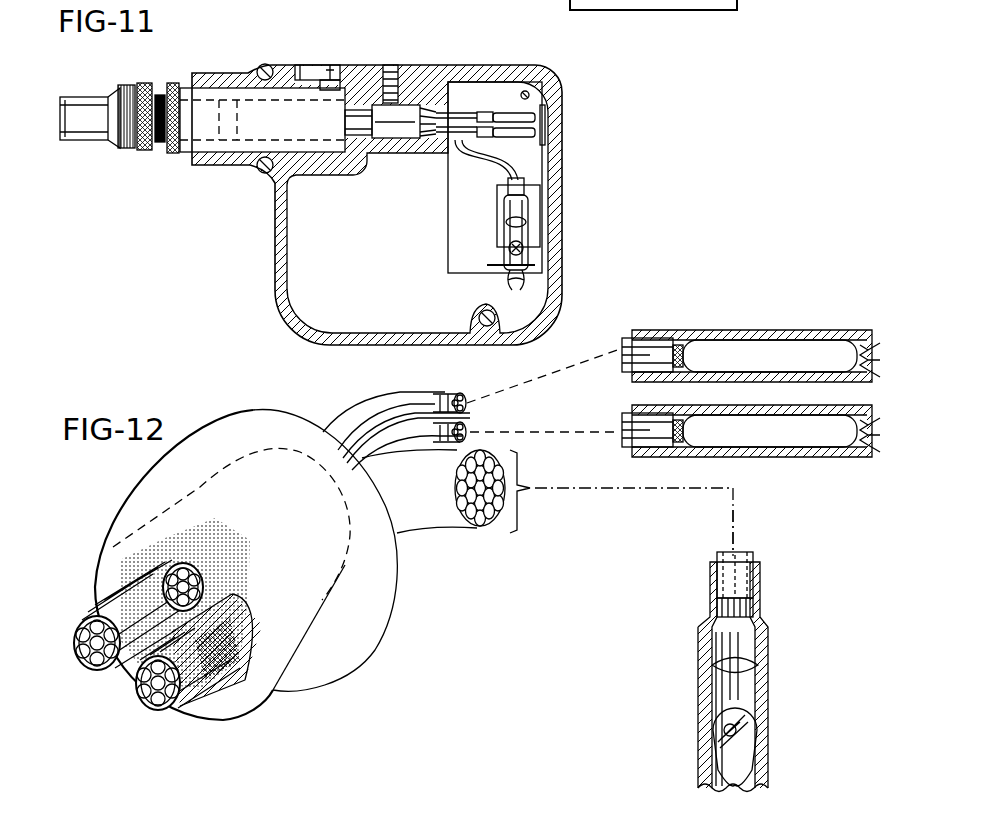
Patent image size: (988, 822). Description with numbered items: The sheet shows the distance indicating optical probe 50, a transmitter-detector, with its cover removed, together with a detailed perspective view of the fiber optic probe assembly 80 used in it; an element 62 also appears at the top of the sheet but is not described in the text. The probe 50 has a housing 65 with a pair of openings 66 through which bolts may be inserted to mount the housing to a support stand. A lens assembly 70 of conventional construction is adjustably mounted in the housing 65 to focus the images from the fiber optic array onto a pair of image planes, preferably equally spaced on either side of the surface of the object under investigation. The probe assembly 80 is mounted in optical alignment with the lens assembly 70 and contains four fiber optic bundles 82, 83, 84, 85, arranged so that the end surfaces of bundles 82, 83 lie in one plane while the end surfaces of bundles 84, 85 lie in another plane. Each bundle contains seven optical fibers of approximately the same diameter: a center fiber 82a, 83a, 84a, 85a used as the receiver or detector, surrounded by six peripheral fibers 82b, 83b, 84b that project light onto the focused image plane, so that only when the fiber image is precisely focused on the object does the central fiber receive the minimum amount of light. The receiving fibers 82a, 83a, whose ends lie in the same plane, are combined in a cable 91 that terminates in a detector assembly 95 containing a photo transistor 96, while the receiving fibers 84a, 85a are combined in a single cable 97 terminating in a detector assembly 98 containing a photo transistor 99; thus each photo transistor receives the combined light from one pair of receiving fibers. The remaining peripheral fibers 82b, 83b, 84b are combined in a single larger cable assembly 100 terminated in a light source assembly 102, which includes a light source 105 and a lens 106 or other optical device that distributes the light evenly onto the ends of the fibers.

In FIG. 11, the distance indicating optical probe 50 is at (378, 52).
In FIG. 11, the support bracket 62 is at (662, 0).
In FIG. 11, the housing 65 is at (420, 76).
In FIG. 11, the openings 66 is at (258, 65).
In FIG. 11, the lens assembly 70 is at (126, 88).
In FIG. 11, the probe assembly 80 is at (400, 136).
In FIG. 12, the probe assembly 80 is at (312, 650).
In FIG. 12, the fiber optic bundle 82 is at (90, 612).
In FIG. 12, the center fiber 82a is at (93, 645).
In FIG. 12, the peripheral fibers 82b is at (108, 668).
In FIG. 12, the fiber optic bundle 83 is at (190, 705).
In FIG. 12, the central receiving optical fiber 83a is at (150, 690).
In FIG. 12, the peripheral transmitting fibers 83b is at (166, 712).
In FIG. 12, the fiber optic bundle 84 is at (215, 592).
In FIG. 12, the central receiving optical fiber 84a is at (200, 575).
In FIG. 12, the peripheral transmitting fibers 84b is at (185, 562).
In FIG. 12, the fiber optic bundle 85 is at (228, 645).
In FIG. 12, the central receiving optical fiber 85a is at (232, 640).
In FIG. 12, the cable 91 is at (370, 412).
In FIG. 11, the detector assembly 95 is at (545, 102).
In FIG. 12, the detector assembly 95 is at (677, 335).
In FIG. 12, the photo transistor 96 is at (736, 352).
In FIG. 12, the cable 97 is at (413, 414).
In FIG. 11, the detector assembly 98 is at (540, 140).
In FIG. 12, the detector assembly 98 is at (745, 455).
In FIG. 12, the photo transistor 99 is at (797, 440).
In FIG. 12, the cable assembly 100 is at (440, 517).
In FIG. 11, the light source assembly 102 is at (530, 212).
In FIG. 12, the light source assembly 102 is at (765, 655).
In FIG. 11, the light source 105 is at (530, 250).
In FIG. 12, the light source 105 is at (755, 745).
In FIG. 12, the lens 106 is at (740, 670).